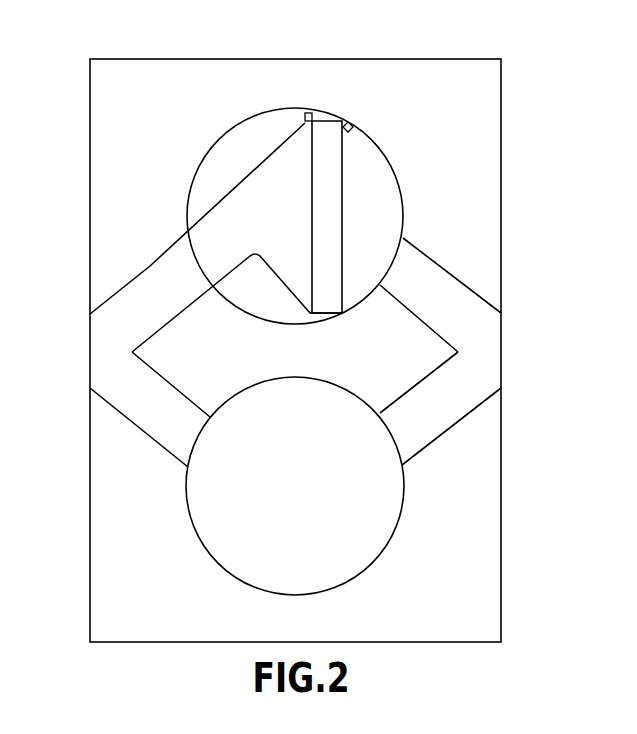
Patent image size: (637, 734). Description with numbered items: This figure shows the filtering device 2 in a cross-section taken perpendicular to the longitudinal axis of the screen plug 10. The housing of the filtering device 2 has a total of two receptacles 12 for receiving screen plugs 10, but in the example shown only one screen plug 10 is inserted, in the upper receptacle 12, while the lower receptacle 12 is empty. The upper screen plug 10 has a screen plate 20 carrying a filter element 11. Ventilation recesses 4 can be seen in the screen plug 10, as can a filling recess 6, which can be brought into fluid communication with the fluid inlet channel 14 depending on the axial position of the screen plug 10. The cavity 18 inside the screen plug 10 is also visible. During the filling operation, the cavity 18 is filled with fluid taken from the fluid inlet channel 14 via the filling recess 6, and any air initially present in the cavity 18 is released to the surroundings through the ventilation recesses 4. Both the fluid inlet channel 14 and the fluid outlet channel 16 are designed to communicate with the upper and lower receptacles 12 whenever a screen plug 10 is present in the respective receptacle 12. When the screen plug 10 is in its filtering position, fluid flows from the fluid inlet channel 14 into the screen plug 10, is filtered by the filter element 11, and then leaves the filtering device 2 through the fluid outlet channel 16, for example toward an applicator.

The filtering device 2 is at (542, 117).
The ventilation recesses 4 is at (308, 113).
The filling recess 6 is at (393, 267).
The screen plug 10 is at (238, 146).
The filter element 11 is at (327, 190).
The receptacle 12 is at (405, 228).
The fluid inlet channel 14 is at (475, 350).
The fluid outlet channel 16 is at (110, 348).
The cavity 18 is at (248, 208).
The screen plate 20 is at (323, 218).